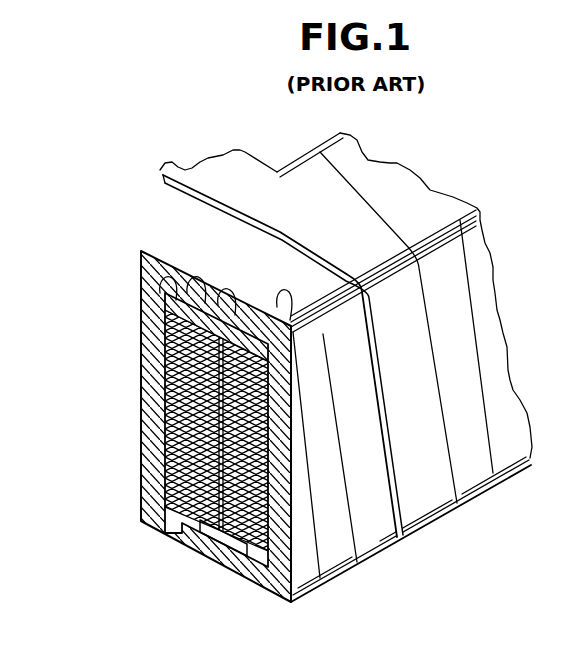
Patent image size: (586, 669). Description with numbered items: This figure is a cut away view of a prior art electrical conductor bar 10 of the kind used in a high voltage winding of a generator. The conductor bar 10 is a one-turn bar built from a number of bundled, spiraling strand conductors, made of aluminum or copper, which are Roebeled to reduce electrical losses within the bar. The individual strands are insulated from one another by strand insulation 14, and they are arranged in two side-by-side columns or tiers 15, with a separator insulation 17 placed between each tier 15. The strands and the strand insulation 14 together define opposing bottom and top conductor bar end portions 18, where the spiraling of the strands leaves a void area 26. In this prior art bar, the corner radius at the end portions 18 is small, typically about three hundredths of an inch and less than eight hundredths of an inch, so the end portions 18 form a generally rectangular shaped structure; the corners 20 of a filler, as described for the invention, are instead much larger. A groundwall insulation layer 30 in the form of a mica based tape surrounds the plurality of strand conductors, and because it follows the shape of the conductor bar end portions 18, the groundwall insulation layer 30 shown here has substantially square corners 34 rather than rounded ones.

The electrical conductor bar 10 is at (108, 389).
The strand insulation 14 is at (291, 411).
The tiers 15 is at (232, 290).
The separator insulation 17 is at (172, 458).
The conductor bar end portions 18 is at (132, 240).
The corners of the filler 20 is at (294, 345).
The void area 26 is at (157, 268).
The groundwall insulation layer 30 is at (160, 170).
The substantially square corners 34 is at (141, 251).